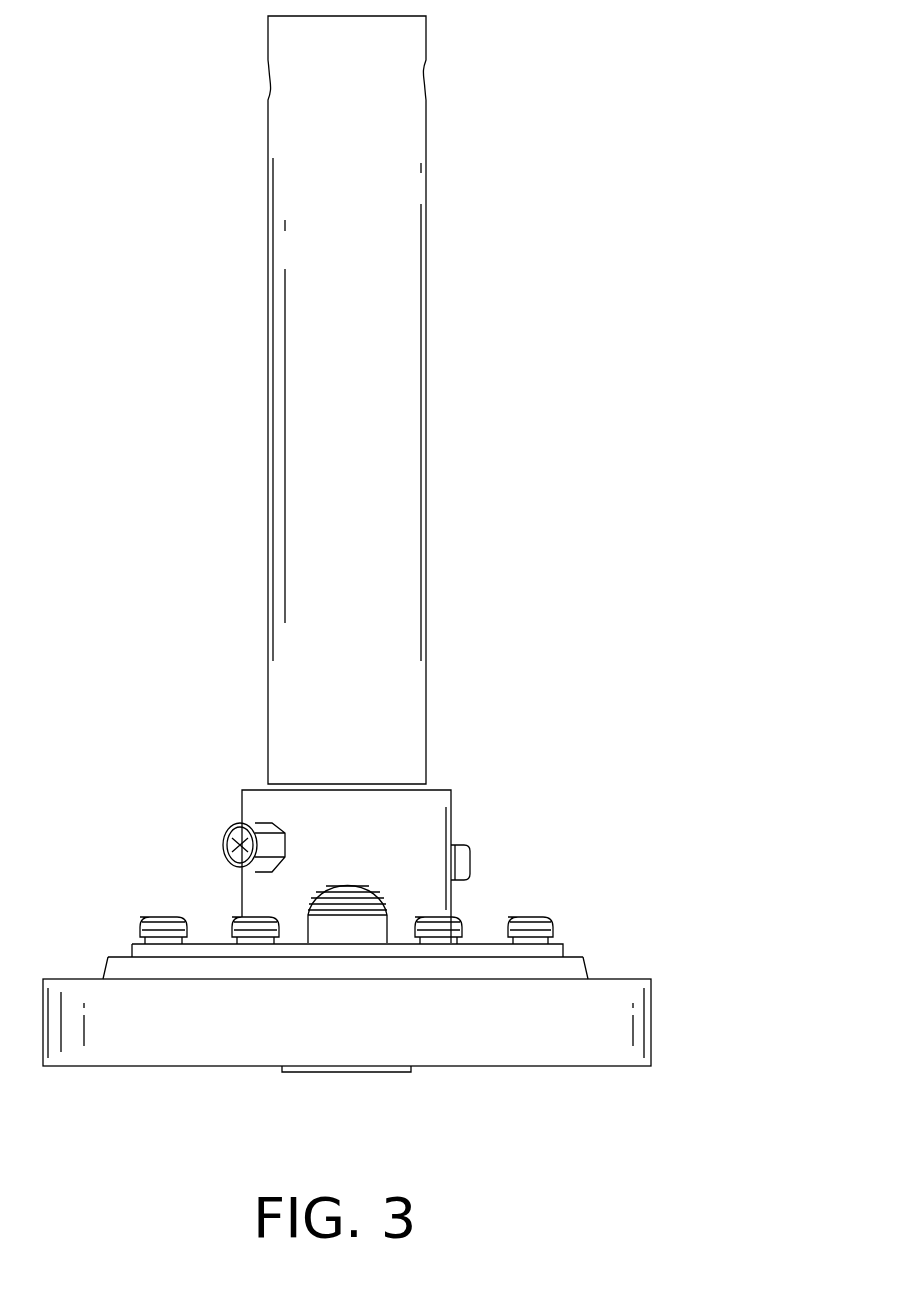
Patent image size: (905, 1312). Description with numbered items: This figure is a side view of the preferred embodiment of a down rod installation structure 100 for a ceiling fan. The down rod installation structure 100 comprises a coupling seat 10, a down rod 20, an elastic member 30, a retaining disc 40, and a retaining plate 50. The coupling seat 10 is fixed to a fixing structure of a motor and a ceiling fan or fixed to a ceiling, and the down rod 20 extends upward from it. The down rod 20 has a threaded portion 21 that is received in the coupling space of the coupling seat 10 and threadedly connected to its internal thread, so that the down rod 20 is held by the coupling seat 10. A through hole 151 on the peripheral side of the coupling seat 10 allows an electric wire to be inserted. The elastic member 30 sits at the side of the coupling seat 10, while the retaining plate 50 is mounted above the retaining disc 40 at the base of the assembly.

The down rod installation structure 100 is at (556, 214).
The down rod 20 is at (437, 392).
The coupling seat 10 is at (462, 809).
The elastic member 30 is at (482, 857).
The threaded portion 21 is at (362, 898).
The through hole 151 is at (330, 927).
The retaining plate 50 is at (199, 935).
The retaining disc 40 is at (75, 968).